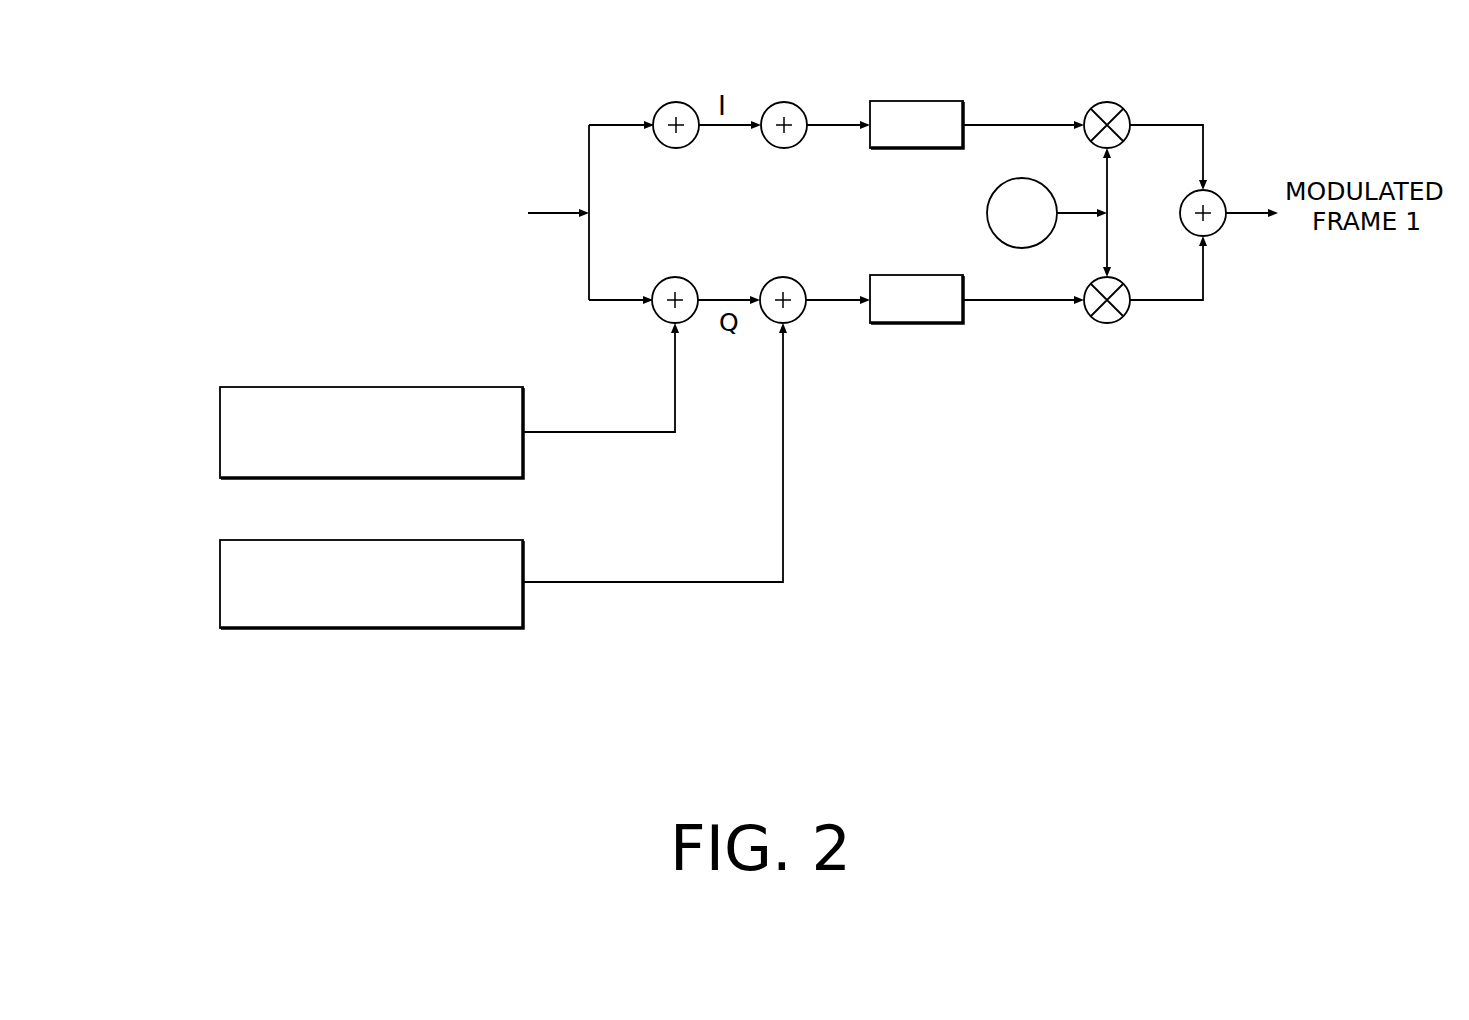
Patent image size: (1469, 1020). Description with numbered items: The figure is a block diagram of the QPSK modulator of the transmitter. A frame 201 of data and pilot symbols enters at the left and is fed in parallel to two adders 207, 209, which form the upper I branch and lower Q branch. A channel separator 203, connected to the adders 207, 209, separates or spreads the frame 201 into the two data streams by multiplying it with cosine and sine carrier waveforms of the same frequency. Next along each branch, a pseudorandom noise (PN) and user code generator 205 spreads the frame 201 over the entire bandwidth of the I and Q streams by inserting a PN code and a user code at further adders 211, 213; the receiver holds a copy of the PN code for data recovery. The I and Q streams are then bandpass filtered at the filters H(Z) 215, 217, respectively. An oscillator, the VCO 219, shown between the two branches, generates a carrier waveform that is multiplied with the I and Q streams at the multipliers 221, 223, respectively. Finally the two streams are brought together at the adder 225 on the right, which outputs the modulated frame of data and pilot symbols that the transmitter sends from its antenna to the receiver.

The frame 201 is at (471, 196).
The channel separator 203 is at (220, 432).
The PN and user code generator 205 is at (220, 582).
The adder 207 is at (663, 109).
The adder 209 is at (677, 278).
The adder 211 is at (778, 104).
The adder 213 is at (800, 318).
The filter H(Z) 215 is at (914, 102).
The filter H(Z) 217 is at (916, 323).
The VCO 219 is at (987, 213).
The multiplier 221 is at (1108, 104).
The multiplier 223 is at (1123, 318).
The adder 225 is at (1219, 231).